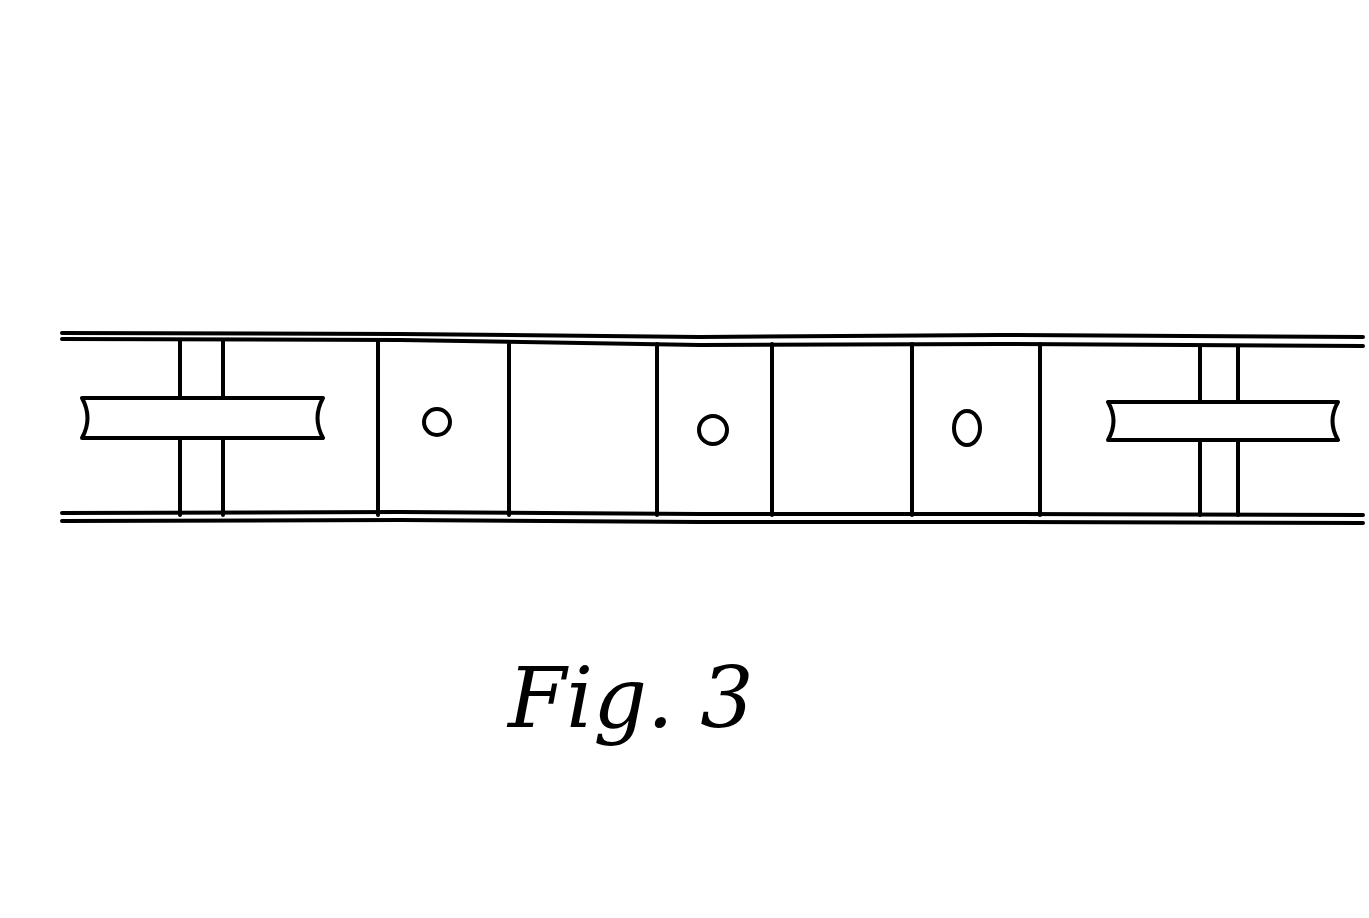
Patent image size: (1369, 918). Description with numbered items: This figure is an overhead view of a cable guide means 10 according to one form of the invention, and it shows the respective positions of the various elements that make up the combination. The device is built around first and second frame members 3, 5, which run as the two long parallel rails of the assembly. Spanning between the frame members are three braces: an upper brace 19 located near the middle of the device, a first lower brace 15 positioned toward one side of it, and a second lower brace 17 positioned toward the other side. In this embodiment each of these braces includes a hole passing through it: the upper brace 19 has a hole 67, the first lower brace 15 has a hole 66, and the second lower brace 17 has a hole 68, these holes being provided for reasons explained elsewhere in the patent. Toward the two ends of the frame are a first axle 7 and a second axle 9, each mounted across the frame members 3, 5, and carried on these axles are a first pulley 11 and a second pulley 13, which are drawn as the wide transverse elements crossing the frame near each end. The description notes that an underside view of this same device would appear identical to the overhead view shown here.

The first frame member 3 is at (598, 337).
The second frame member 5 is at (280, 520).
The first axle 7 is at (207, 363).
The second axle 9 is at (1225, 372).
The cable guide means 10 is at (1012, 153).
The first pulley 11 is at (1158, 420).
The second pulley 13 is at (252, 420).
The first lower brace 15 is at (462, 382).
The second lower brace 17 is at (1002, 380).
The upper brace 19 is at (725, 375).
The hole 66 is at (437, 435).
The hole 67 is at (713, 445).
The hole 68 is at (967, 446).